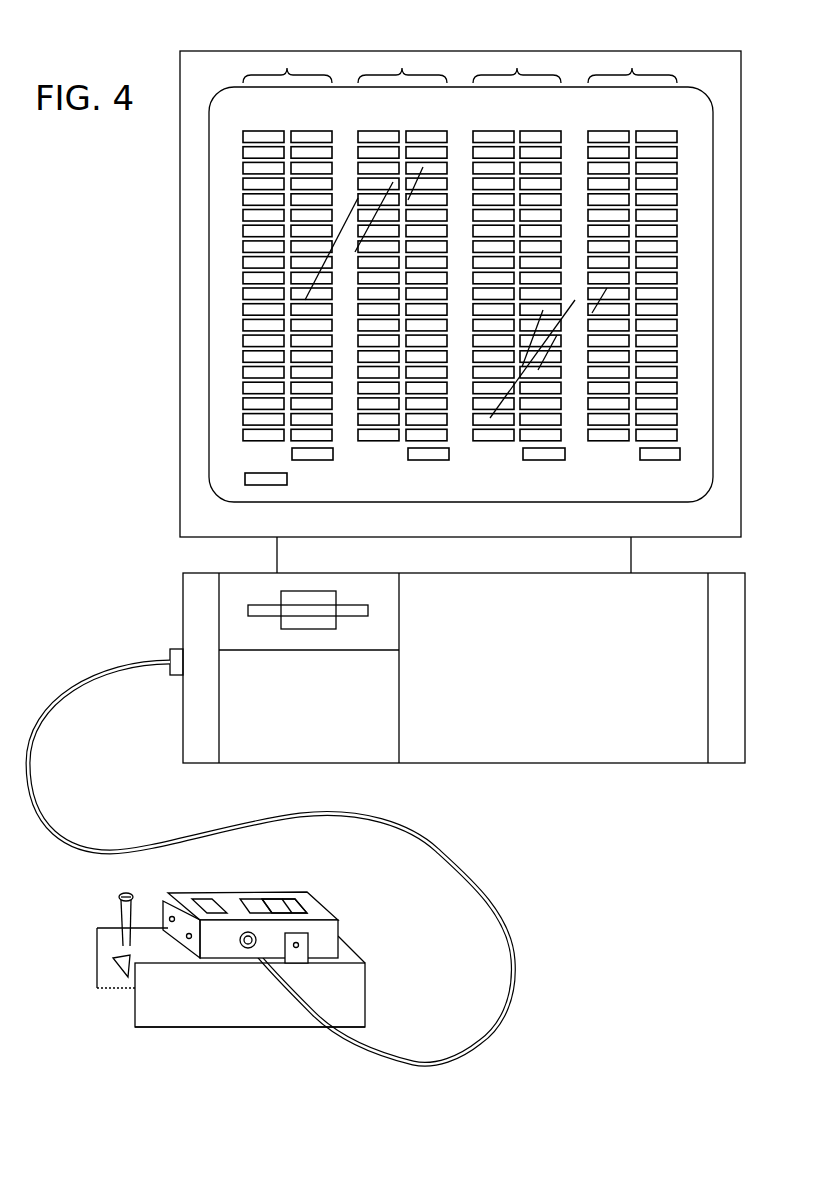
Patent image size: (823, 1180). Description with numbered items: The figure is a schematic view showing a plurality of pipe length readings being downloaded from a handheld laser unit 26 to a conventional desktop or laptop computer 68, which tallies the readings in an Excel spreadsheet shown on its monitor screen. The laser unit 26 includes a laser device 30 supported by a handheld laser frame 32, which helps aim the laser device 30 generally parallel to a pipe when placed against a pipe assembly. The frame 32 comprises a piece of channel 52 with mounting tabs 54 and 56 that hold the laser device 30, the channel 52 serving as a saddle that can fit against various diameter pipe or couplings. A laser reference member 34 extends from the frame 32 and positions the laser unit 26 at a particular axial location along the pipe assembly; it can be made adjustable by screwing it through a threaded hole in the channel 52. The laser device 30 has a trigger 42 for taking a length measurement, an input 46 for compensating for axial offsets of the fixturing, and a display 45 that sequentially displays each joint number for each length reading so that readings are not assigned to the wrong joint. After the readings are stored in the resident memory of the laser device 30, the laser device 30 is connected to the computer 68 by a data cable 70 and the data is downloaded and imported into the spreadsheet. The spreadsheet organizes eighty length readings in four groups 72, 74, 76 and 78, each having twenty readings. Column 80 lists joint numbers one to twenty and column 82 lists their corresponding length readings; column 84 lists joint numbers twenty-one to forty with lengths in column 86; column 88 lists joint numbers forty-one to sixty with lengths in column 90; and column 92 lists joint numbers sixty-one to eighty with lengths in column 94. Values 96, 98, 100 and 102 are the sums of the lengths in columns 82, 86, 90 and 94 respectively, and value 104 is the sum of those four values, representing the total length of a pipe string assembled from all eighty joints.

The handheld laser unit 26 is at (232, 948).
The laser device 30 is at (222, 892).
The handheld laser frame 32 is at (135, 1002).
The laser reference member 34 is at (125, 968).
The trigger 42 is at (250, 900).
The display 45 is at (208, 900).
The input 46 is at (268, 900).
The channel 52 is at (227, 1028).
The mounting tab 54 is at (310, 940).
The mounting tab 56 is at (163, 918).
The computer 68 is at (631, 764).
The data cable 70 is at (470, 882).
The group 72 is at (289, 224).
The group 74 is at (392, 224).
The group 76 is at (511, 224).
The group 78 is at (622, 224).
The column 80 is at (263, 126).
The column 82 is at (311, 126).
The column 84 is at (378, 126).
The column 86 is at (426, 126).
The column 88 is at (493, 126).
The column 90 is at (540, 126).
The column 92 is at (608, 126).
The column 94 is at (656, 126).
The value 96 is at (292, 454).
The value 98 is at (423, 461).
The value 100 is at (540, 461).
The value 102 is at (655, 461).
The value 104 is at (262, 486).